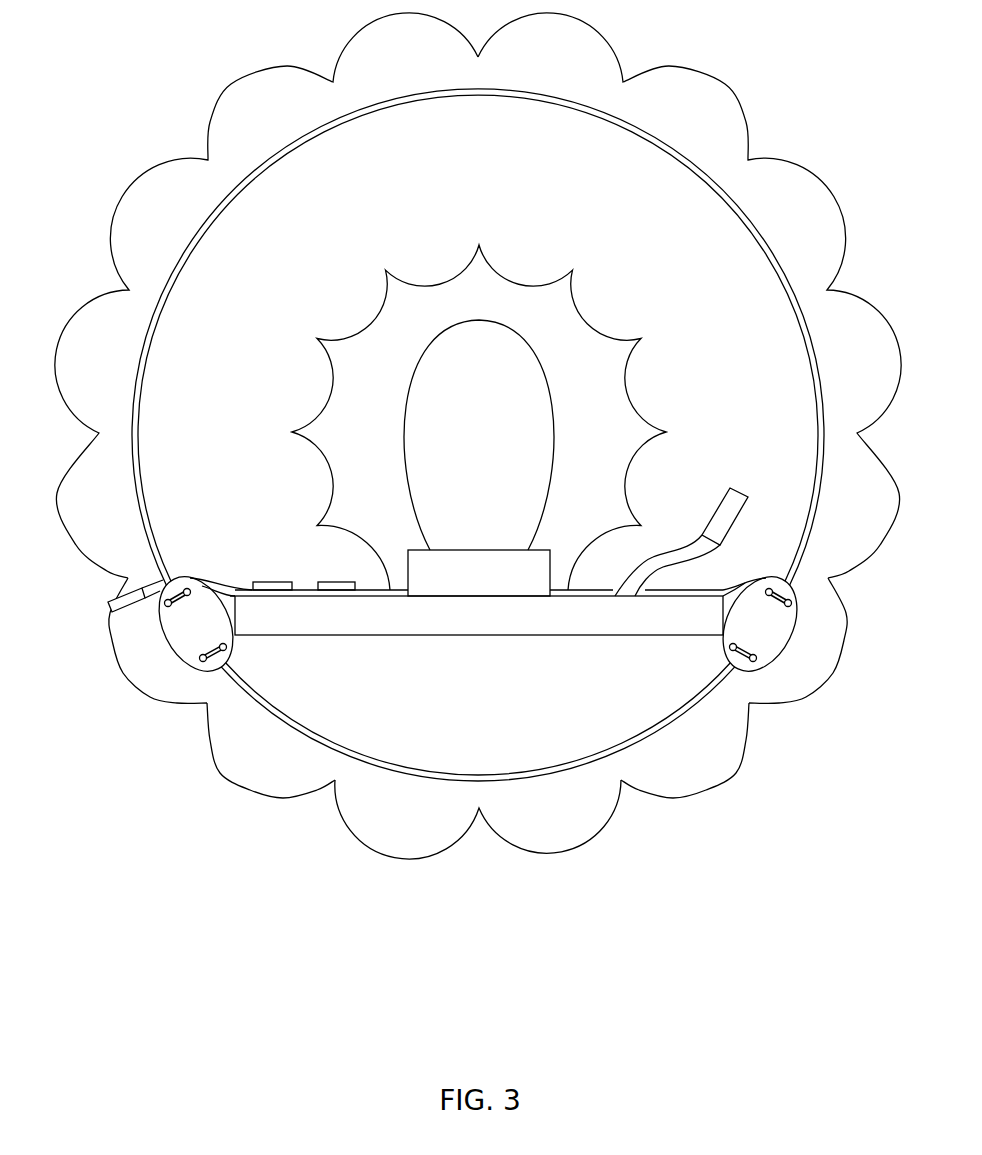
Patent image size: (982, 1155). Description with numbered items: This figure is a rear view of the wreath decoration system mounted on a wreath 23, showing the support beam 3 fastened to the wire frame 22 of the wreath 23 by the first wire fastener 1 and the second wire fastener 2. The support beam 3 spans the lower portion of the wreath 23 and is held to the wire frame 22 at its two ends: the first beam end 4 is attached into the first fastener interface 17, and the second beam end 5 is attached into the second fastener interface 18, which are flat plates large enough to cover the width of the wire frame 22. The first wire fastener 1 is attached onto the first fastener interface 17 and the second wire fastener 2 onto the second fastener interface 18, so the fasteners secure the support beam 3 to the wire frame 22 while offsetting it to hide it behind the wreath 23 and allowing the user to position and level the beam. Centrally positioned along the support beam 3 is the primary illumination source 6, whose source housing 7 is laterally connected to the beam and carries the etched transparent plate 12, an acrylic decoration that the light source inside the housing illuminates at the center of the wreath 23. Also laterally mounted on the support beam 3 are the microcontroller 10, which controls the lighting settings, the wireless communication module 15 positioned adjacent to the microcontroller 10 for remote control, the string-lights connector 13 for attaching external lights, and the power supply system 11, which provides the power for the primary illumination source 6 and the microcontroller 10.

The first wire fastener 1 is at (167, 622).
The second wire fastener 2 is at (793, 622).
The support beam 3 is at (470, 636).
The first beam end 4 is at (240, 627).
The second beam end 5 is at (713, 627).
The primary illumination source 6 is at (558, 546).
The source housing 7 is at (460, 562).
The microcontroller 10 is at (270, 582).
The power supply system 11 is at (108, 603).
The etched transparent plate 12 is at (528, 402).
The string-lights connector 13 is at (732, 497).
The wireless communication module 15 is at (331, 582).
The first fastener interface 17 is at (185, 668).
The second fastener interface 18 is at (768, 672).
The wire frame 22 is at (445, 90).
The wreath 23 is at (707, 98).